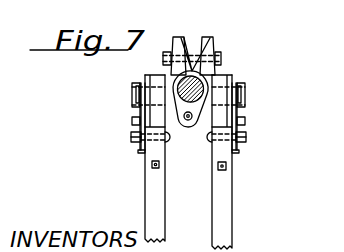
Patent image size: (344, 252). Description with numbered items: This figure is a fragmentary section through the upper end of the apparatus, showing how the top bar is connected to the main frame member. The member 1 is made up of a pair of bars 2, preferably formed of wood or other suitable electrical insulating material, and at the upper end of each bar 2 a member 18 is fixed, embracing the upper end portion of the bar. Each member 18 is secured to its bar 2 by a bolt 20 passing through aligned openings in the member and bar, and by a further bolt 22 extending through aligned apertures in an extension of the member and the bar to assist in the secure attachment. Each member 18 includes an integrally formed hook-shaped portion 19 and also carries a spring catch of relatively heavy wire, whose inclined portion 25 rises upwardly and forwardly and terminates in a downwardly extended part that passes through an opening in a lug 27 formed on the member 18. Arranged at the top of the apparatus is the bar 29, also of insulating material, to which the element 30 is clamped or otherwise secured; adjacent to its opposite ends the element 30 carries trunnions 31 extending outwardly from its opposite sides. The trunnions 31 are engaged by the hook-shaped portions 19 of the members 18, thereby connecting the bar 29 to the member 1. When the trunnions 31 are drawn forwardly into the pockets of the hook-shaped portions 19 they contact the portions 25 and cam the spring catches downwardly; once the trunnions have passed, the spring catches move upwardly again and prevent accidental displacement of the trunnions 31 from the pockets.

The member 1 is at (140, 222).
The bars 2 is at (212, 218).
The member 18 is at (140, 153).
The hook-shaped portion 19 is at (150, 78).
The bolt 20 is at (131, 138).
The bolt 22 is at (153, 168).
The portion of spring catch 25 is at (140, 105).
The lug 27 is at (132, 121).
The bar 29 is at (207, 82).
The element 30 is at (210, 38).
The trunnions 31 is at (132, 90).